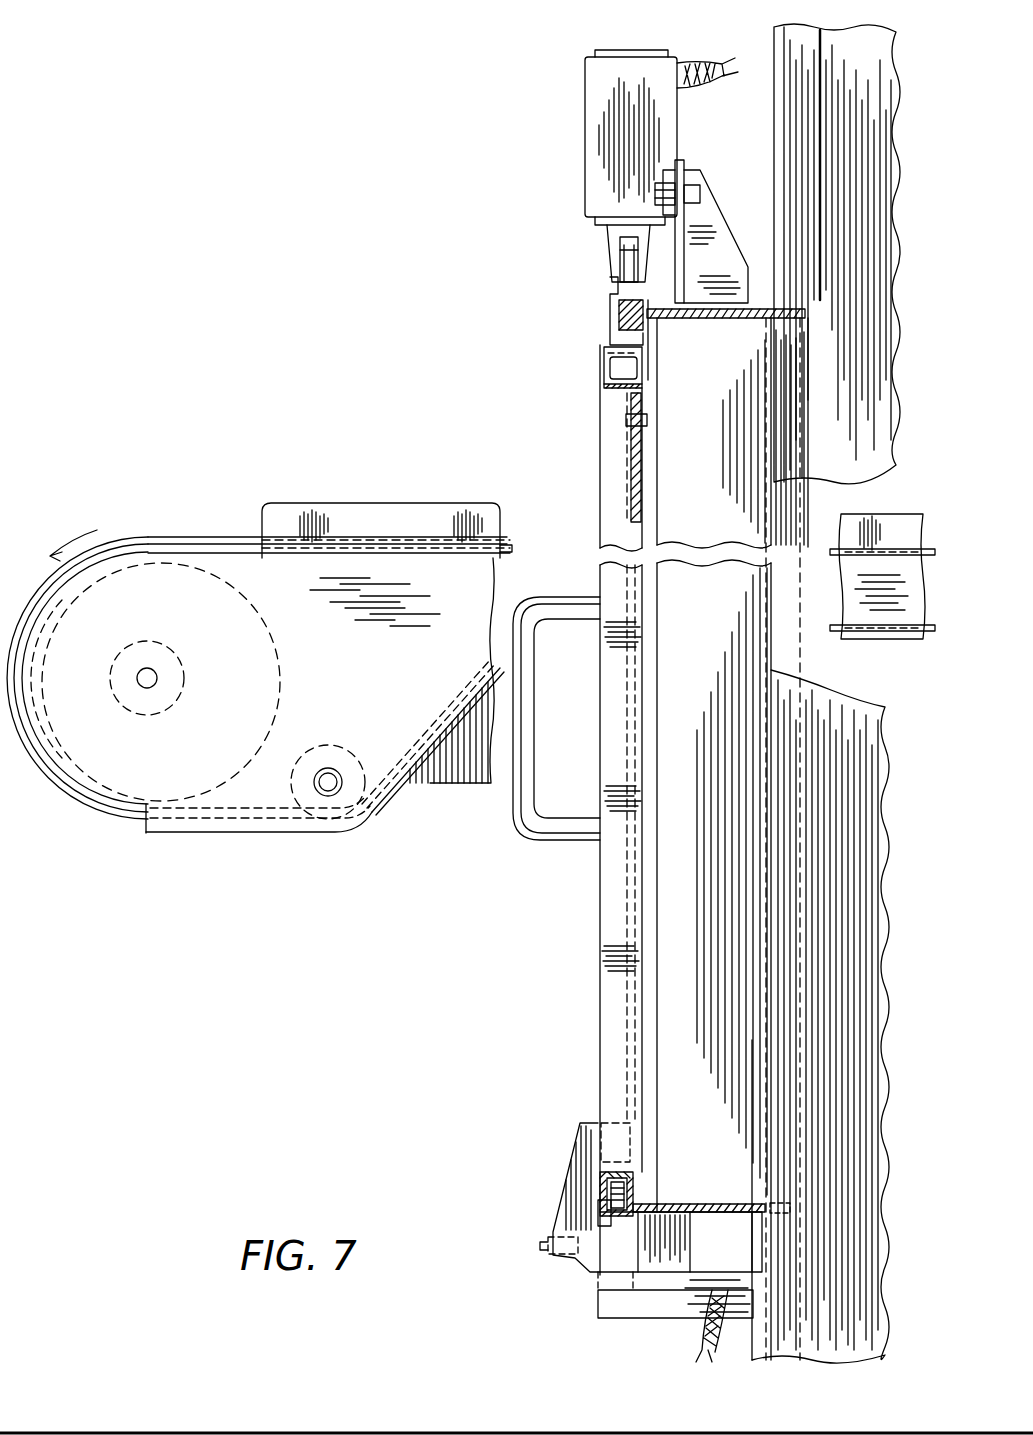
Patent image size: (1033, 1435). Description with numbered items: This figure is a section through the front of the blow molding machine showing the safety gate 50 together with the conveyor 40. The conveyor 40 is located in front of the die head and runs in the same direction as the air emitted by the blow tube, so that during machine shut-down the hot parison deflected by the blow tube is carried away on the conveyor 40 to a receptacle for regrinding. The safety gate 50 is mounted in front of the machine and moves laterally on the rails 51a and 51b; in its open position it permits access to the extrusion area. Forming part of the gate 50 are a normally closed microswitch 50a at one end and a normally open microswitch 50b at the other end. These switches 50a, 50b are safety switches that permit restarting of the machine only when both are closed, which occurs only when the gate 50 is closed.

The conveyor 40 is at (250, 572).
The safety gate 50 is at (578, 988).
The normally closed microswitch 50a is at (609, 283).
The rail 51a is at (619, 311).
The normally open microswitch 50b is at (708, 1187).
The rail 51b is at (708, 1156).